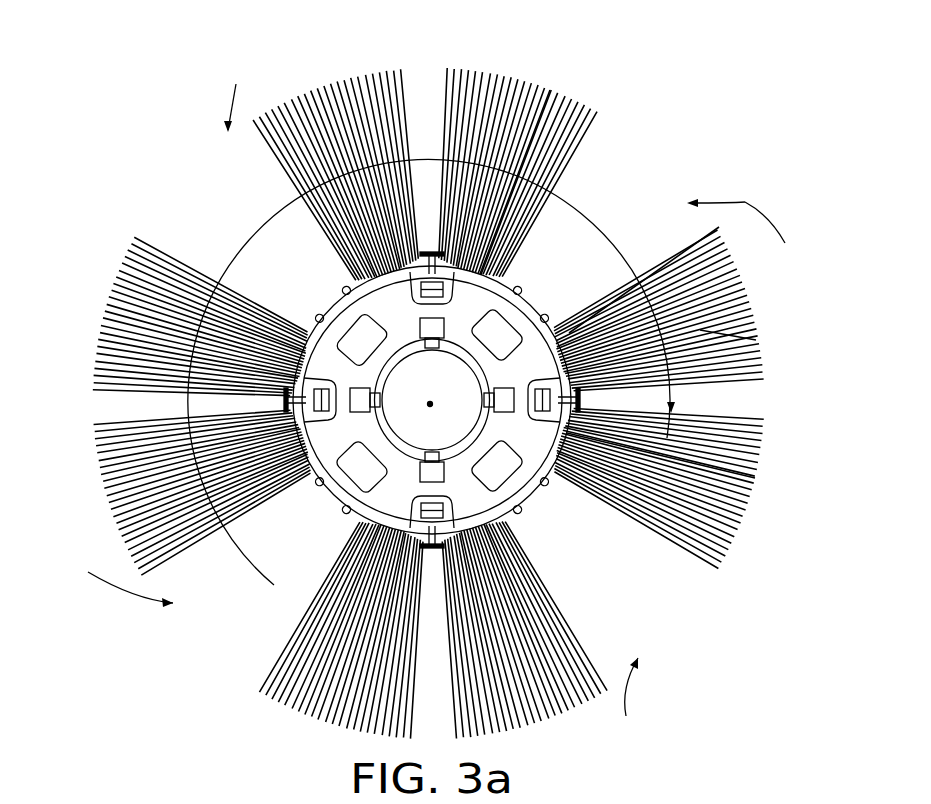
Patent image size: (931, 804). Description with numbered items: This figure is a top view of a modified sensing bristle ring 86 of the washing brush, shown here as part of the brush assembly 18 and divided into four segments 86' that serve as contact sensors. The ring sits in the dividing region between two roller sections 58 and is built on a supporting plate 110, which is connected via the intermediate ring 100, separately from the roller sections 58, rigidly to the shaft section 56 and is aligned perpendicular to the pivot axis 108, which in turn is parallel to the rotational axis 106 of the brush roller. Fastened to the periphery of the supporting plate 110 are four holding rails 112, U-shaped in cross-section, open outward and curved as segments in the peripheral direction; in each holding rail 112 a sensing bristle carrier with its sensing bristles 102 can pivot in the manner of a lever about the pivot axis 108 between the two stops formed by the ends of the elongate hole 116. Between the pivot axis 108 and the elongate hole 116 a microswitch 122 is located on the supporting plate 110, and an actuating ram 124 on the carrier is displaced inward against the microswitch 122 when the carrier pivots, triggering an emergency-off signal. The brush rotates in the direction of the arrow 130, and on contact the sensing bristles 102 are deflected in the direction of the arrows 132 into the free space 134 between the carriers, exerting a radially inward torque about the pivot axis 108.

The rotary brush 18 is at (100, 494).
The shaft section 56 is at (462, 367).
The roller section 58 is at (514, 310).
The sensing bristle ring 86 is at (693, 422).
The segment 86' is at (664, 284).
The intermediate ring 100 is at (430, 404).
The sensing bristle 102 is at (752, 333).
The rotational axis 106 is at (338, 516).
The pivot axis 108 is at (282, 315).
The supporting plate 110 is at (548, 488).
The holding rail 112 is at (335, 283).
The elongate hole 116 is at (275, 510).
The microswitch 122 is at (424, 287).
The actuating ram 124 is at (436, 252).
The arrow indicating direction of rotation 130 is at (600, 233).
The arrows indicating deflection direction 132 is at (245, 65).
The free space 134 is at (590, 166).